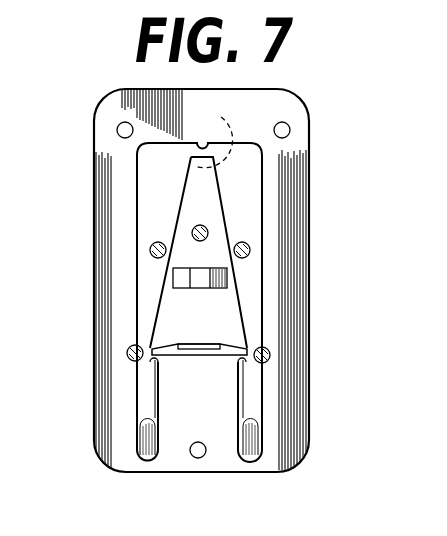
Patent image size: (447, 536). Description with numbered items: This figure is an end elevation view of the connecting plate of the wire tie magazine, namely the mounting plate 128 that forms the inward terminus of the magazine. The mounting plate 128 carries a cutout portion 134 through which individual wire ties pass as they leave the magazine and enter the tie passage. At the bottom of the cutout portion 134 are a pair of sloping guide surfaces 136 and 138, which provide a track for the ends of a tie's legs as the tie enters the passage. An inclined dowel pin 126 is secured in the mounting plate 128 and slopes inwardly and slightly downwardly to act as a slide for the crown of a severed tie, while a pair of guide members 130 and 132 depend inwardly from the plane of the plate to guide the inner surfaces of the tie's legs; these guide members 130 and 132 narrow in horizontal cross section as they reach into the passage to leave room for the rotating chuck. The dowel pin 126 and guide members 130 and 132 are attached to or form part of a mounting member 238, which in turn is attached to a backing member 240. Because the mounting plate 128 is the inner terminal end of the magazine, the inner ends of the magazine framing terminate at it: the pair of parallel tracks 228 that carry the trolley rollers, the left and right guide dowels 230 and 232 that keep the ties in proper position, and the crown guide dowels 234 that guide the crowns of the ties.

The dowel pin 126 is at (193, 230).
The mounting plate 128 is at (299, 166).
The guide member 130 is at (228, 283).
The guide member 132 is at (220, 343).
The cutout portion 134 is at (157, 174).
The sloping guide surface 136 is at (140, 460).
The sloping guide surface 138 is at (252, 460).
The parallel tracks 228 is at (151, 247).
The left guide dowels 230 is at (128, 351).
The right guide dowels 232 is at (270, 356).
The crown guide dowels 234 is at (208, 135).
The mounting member 238 is at (205, 193).
The backing member 240 is at (223, 403).